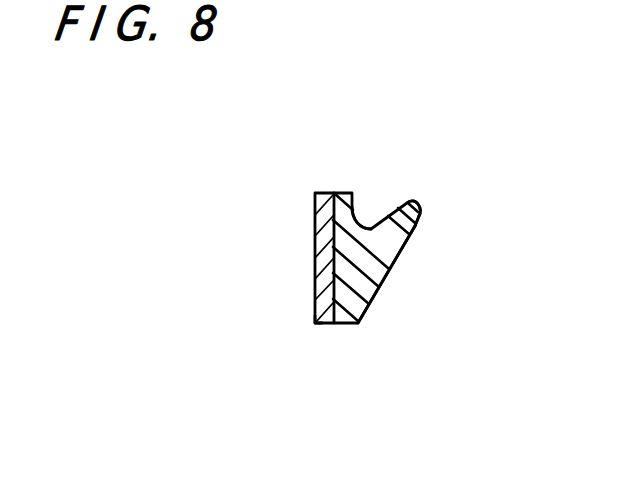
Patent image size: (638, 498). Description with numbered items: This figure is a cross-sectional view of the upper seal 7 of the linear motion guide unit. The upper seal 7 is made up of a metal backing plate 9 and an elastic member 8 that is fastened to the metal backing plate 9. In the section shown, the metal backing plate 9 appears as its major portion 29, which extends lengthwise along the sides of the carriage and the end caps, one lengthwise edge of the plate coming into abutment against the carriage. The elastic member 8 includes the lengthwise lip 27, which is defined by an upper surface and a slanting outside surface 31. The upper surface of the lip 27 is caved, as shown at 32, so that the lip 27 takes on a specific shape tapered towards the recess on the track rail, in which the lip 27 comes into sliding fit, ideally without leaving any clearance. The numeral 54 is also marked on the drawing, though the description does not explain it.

The upper seal 7 is at (386, 160).
The elastic member 8 is at (358, 282).
The metal backing plate 9 is at (323, 248).
The lip 27 is at (416, 226).
The major portion 29 is at (319, 307).
The slanting outside surface 31 is at (393, 264).
The caved upper surface 32 is at (382, 217).
The lip 54 is at (418, 206).